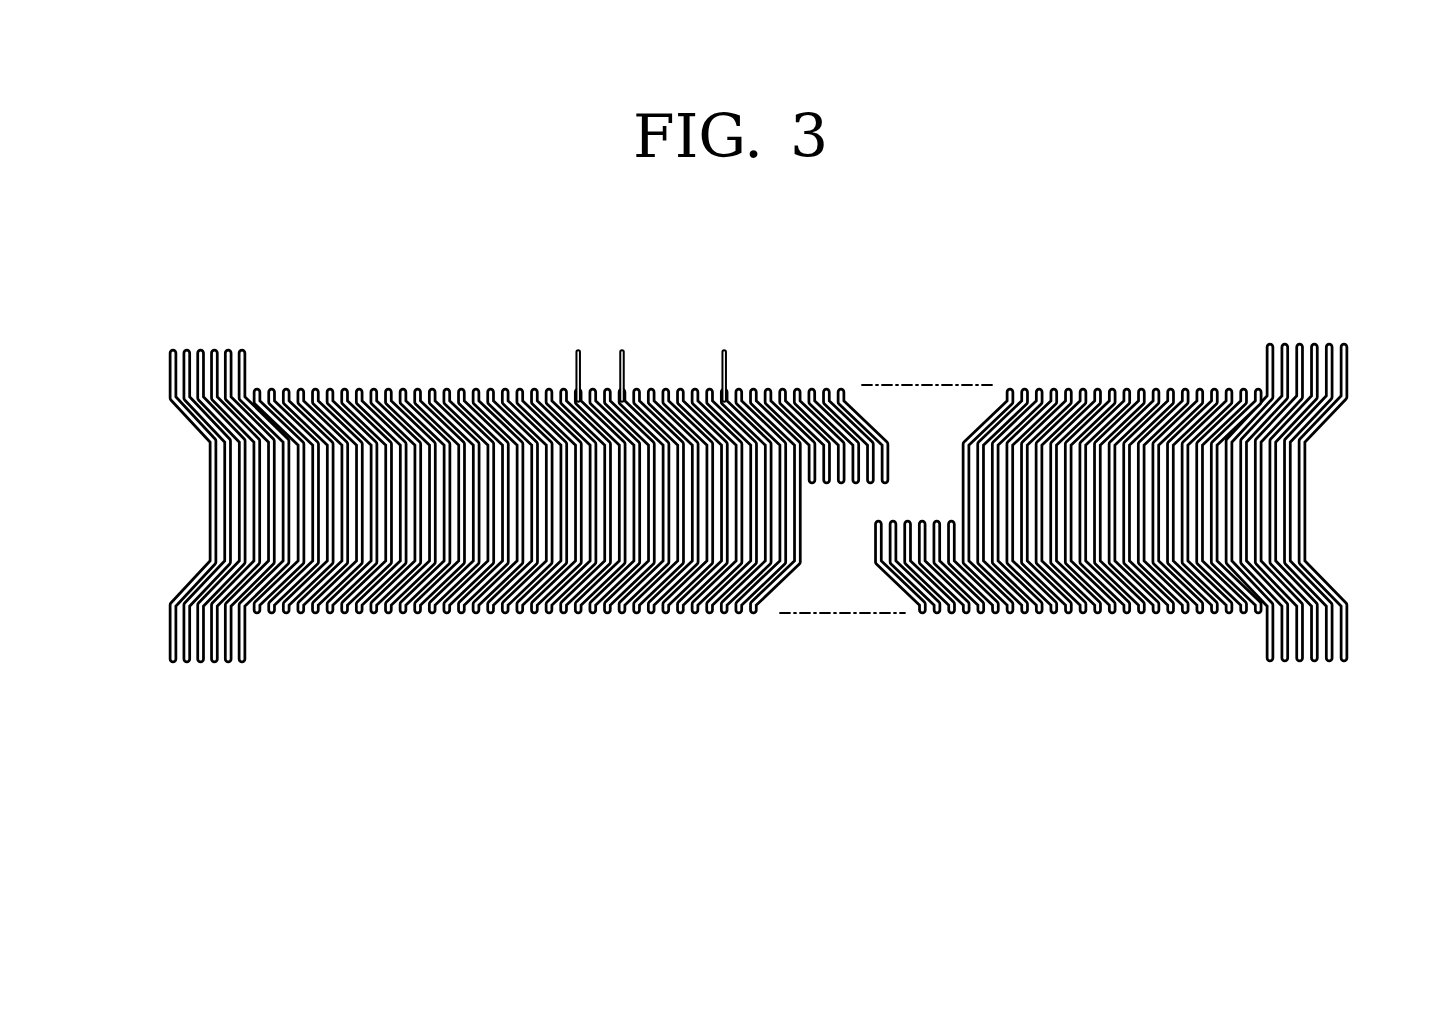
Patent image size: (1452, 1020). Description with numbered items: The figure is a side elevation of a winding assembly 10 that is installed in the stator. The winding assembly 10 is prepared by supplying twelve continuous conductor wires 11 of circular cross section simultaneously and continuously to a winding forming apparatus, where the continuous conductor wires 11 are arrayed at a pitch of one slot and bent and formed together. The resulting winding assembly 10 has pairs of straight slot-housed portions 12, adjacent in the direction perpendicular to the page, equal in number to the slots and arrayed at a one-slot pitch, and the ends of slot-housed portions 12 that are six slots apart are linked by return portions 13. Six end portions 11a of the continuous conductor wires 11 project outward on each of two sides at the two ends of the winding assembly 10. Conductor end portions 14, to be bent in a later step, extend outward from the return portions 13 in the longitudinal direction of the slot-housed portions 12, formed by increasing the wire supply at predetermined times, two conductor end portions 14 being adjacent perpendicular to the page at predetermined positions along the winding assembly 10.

The winding assembly 10 is at (364, 256).
The continuous conductor wire 11 is at (848, 559).
The end portion of continuous conductor wire 11a is at (252, 324).
The slot-housed portion 12 is at (804, 523).
The return portion 13 is at (777, 592).
The conductor end portion 14 is at (728, 355).